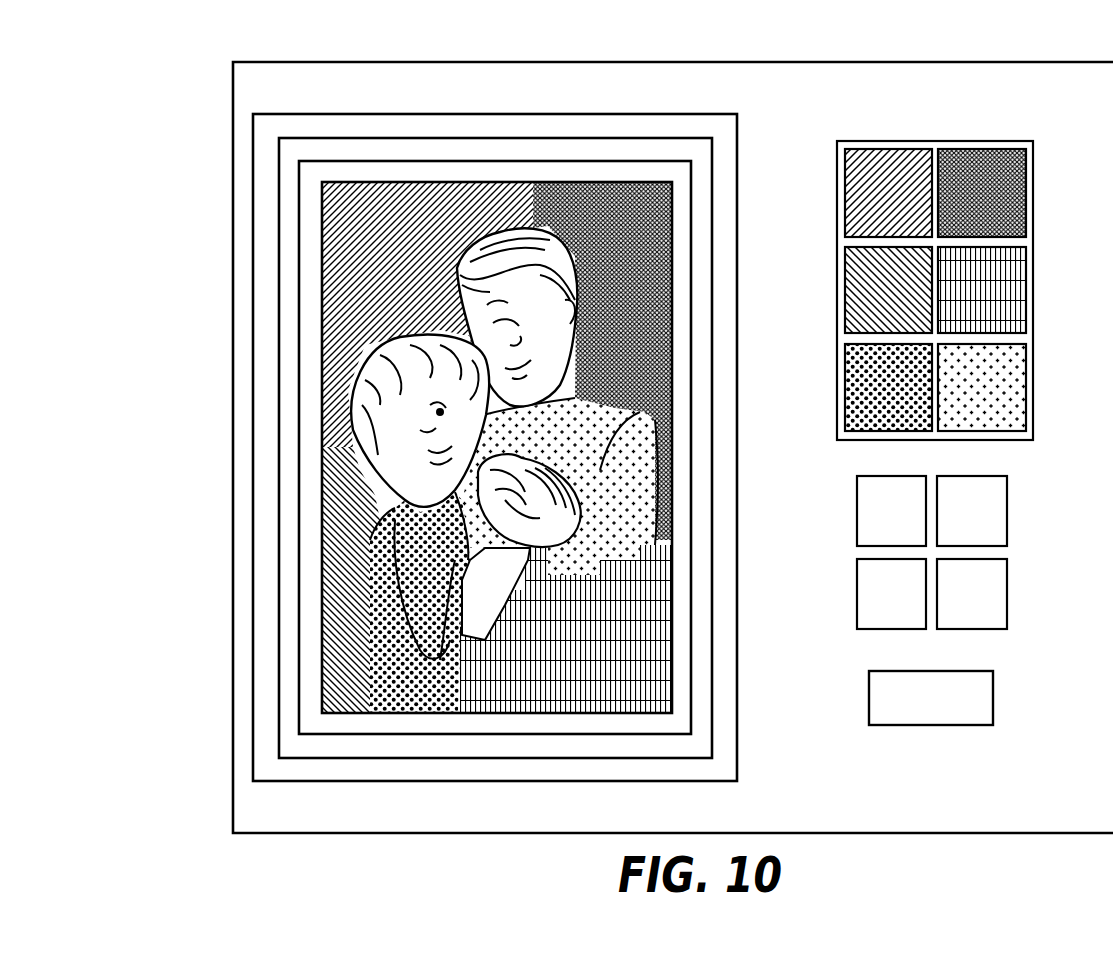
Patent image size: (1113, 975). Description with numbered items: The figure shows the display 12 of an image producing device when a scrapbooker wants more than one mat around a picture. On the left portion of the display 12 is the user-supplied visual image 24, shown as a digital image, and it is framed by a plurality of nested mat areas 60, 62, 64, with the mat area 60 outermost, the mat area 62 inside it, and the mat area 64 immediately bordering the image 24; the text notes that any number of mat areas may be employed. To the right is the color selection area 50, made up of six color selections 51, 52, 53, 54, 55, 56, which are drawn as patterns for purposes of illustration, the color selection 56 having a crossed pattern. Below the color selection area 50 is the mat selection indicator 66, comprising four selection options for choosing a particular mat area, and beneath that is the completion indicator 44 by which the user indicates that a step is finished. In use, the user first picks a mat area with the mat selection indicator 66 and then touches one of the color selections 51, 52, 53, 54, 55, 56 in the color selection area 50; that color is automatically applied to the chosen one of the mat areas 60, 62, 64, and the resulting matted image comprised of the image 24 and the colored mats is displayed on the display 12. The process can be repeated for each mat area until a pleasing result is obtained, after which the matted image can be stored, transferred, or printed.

The display 12 is at (226, 111).
The user-supplied visual image 24 is at (329, 517).
The completion indicator 44 is at (869, 700).
The color selection area 50 is at (935, 141).
The color selection 51 is at (845, 193).
The color selection 52 is at (1026, 192).
The color selection 53 is at (845, 290).
The color selection 54 is at (1026, 287).
The color selection 55 is at (845, 385).
The color selection 56 is at (1026, 382).
The mat area 60 is at (265, 243).
The mat area 62 is at (289, 292).
The mat area 64 is at (309, 350).
The mat selection indicator 66 is at (1008, 513).